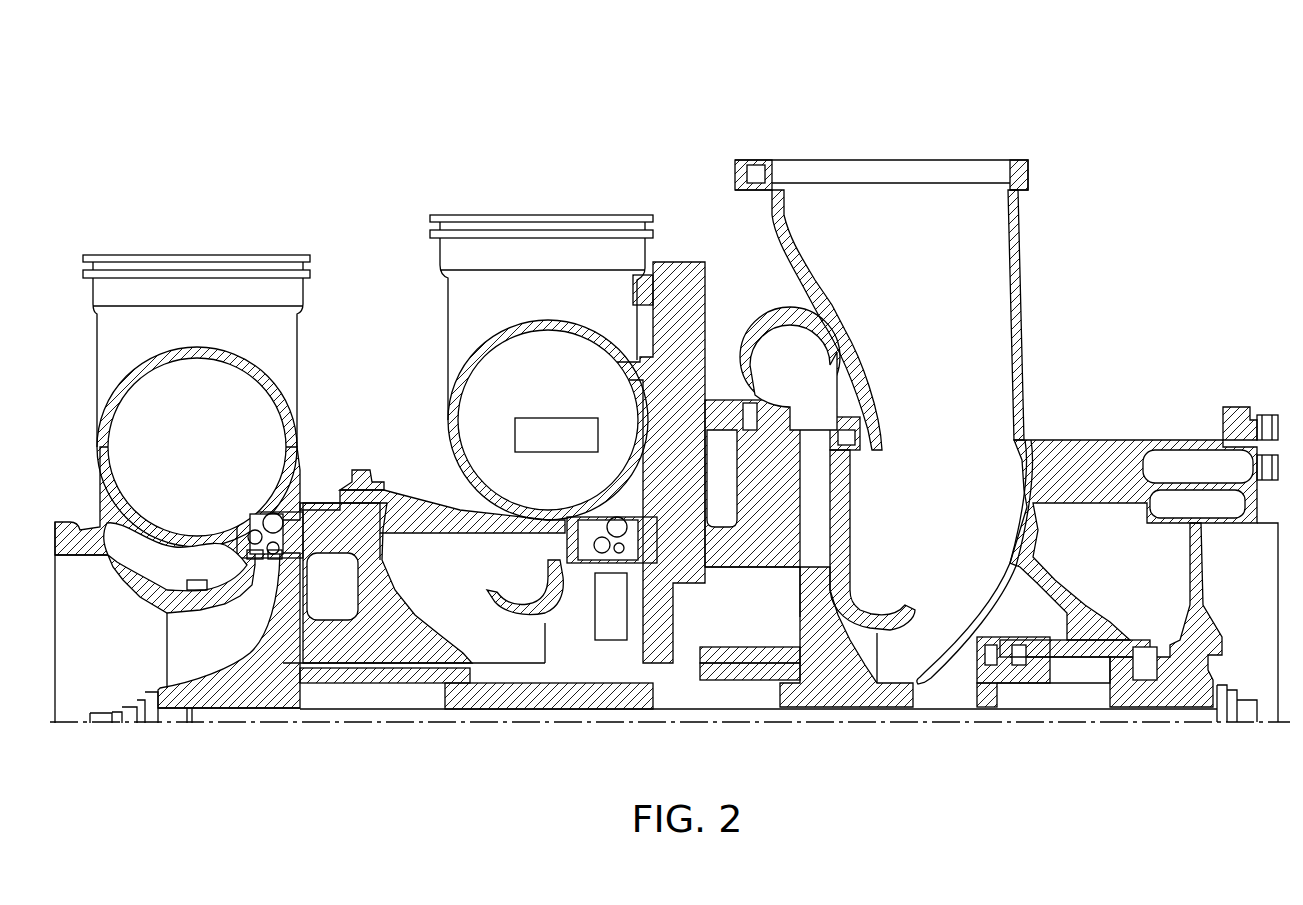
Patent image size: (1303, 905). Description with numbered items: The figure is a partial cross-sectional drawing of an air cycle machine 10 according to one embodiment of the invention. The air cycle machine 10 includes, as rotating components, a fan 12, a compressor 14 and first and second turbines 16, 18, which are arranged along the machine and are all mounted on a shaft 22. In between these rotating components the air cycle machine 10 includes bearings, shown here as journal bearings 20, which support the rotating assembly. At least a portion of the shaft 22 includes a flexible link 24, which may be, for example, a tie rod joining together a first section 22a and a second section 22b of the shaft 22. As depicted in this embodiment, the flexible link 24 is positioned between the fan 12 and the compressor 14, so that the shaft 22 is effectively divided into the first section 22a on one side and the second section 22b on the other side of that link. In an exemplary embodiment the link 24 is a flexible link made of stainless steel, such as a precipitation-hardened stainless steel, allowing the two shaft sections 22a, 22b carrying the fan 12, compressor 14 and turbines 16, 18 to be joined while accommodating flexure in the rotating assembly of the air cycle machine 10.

The air cycle machine 10 is at (262, 152).
The fan 12 is at (1150, 709).
The compressor 14 is at (825, 705).
The first turbine 16 is at (260, 705).
The second turbine 18 is at (524, 705).
The journal bearings 20 is at (422, 670).
The shaft 22 is at (1180, 722).
The first section 22a is at (858, 712).
The second section 22b is at (1055, 712).
The flexible link 24 is at (955, 722).